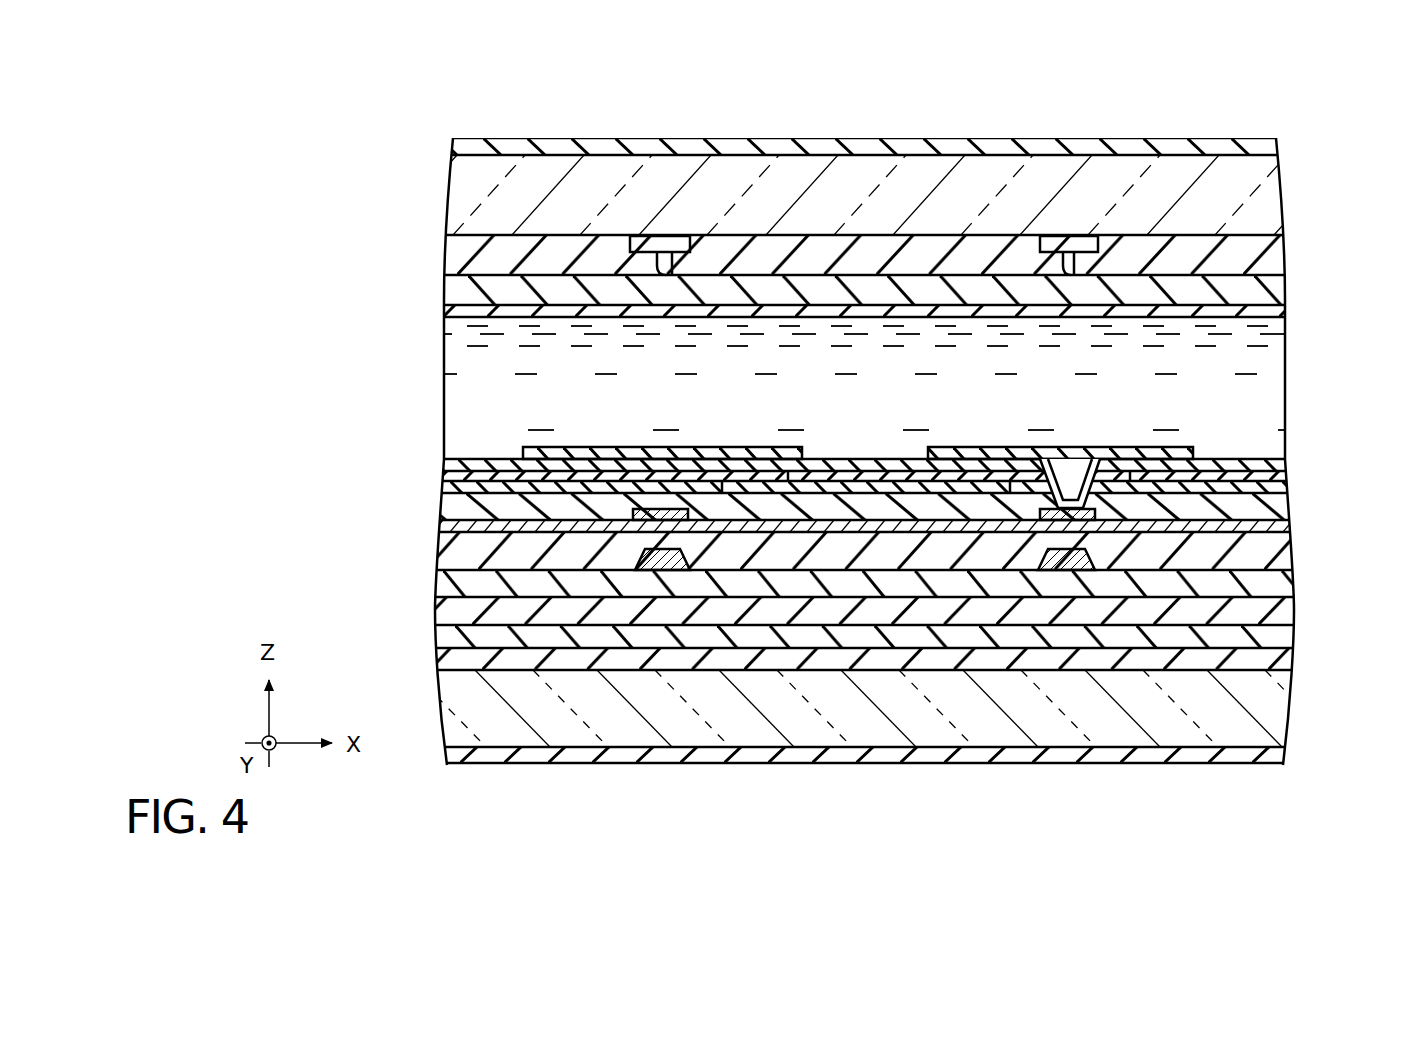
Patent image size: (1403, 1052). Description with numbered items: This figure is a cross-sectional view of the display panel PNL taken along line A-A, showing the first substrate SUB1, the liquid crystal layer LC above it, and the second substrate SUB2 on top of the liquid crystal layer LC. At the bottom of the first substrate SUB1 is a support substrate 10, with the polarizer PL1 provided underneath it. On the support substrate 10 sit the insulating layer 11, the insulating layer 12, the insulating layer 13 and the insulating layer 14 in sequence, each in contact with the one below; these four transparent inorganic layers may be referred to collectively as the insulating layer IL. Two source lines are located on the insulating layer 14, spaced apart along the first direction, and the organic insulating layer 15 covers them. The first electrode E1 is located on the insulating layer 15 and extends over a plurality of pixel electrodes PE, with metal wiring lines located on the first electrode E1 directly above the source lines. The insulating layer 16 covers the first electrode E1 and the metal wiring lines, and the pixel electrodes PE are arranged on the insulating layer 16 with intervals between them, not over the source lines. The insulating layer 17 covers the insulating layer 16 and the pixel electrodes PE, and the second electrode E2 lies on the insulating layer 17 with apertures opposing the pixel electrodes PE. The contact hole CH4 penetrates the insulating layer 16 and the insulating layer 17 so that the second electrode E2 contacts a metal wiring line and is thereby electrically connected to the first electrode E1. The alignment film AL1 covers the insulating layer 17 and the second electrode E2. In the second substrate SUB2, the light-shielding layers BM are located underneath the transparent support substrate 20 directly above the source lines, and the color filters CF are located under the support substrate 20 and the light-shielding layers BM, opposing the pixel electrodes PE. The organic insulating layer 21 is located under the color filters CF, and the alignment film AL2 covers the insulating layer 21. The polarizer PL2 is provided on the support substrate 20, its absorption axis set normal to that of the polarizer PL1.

The display panel PNL is at (1132, 104).
The first substrate SUB1 is at (428, 683).
The second substrate SUB2 is at (428, 190).
The support substrate 10 is at (865, 708).
The insulating layer 11 is at (865, 659).
The insulating layer 12 is at (865, 636).
The insulating layer 13 is at (865, 611).
The insulating layer 14 is at (865, 583).
The insulating layer 15 is at (865, 551).
The insulating layer 16 is at (865, 506).
The insulating layer 17 is at (865, 487).
The insulating layer IL is at (865, 620).
The polarizer PL1 is at (865, 755).
The polarizer PL2 is at (865, 146).
The alignment film AL1 is at (865, 465).
The alignment film AL2 is at (865, 311).
The support substrate 20 is at (865, 195).
The insulating layer 21 is at (865, 290).
The color filters CF is at (865, 255).
The light-shielding layers BM is at (864, 255).
The liquid crystal layer LC is at (865, 377).
The pixel electrode PE is at (865, 476).
The first electrode E1 is at (865, 526).
The second electrode E2 is at (858, 453).
The contact hole CH4 is at (1070, 483).
The line A- A is at (864, 780).